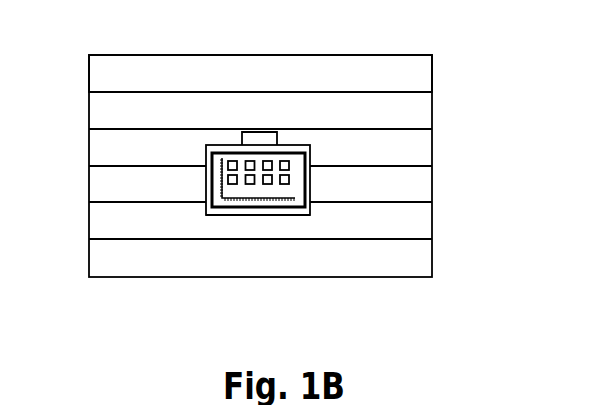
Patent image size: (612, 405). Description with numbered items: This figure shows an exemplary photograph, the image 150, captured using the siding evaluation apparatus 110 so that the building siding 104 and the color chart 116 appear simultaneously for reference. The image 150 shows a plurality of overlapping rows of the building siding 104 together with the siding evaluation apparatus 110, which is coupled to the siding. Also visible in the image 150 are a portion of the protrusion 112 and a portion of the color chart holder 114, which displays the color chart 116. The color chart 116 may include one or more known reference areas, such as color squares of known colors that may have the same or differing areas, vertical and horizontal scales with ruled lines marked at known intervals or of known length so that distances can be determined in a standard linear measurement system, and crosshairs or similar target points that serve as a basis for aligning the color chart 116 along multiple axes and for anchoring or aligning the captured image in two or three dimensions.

The building siding 104 is at (413, 257).
The image 150 is at (381, 55).
The siding evaluation apparatus 110 is at (317, 179).
The protrusion 112 is at (268, 132).
The color chart holder 114 is at (290, 215).
The color chart 116 is at (224, 145).